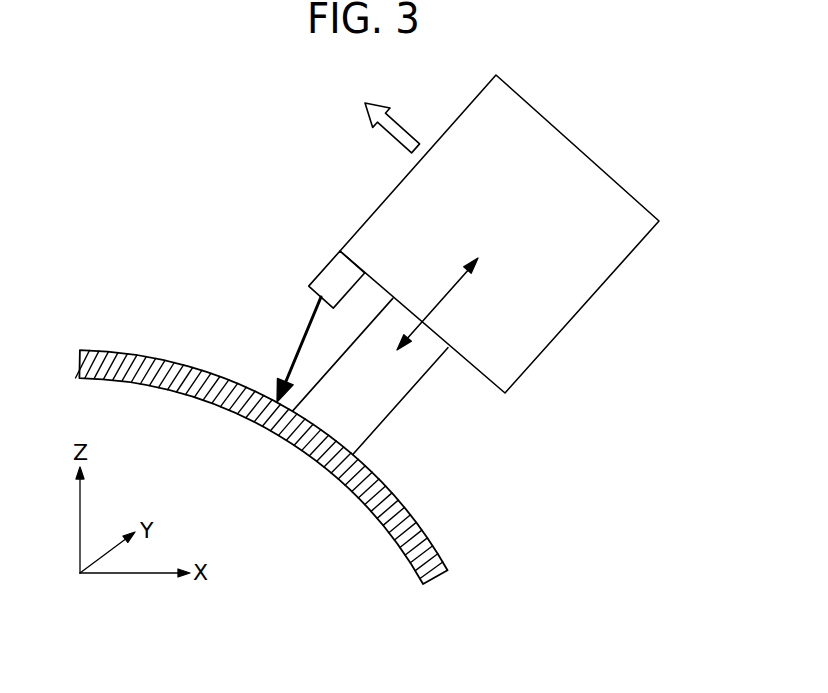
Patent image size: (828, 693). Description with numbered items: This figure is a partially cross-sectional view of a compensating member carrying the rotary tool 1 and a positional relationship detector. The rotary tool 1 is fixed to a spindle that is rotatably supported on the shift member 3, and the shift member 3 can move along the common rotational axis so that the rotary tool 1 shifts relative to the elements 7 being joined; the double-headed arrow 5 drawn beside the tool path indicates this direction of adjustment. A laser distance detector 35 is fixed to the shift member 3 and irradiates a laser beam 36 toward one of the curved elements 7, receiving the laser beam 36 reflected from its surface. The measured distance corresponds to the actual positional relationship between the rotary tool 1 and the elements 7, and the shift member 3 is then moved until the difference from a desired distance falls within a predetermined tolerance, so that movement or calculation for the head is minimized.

The rotary tool 1 is at (383, 402).
The shift member 3 is at (572, 303).
The movement direction arrow 5 is at (450, 290).
The elements 7 is at (436, 542).
The laser distance detector 35 is at (332, 272).
The laser beam 36 is at (303, 338).